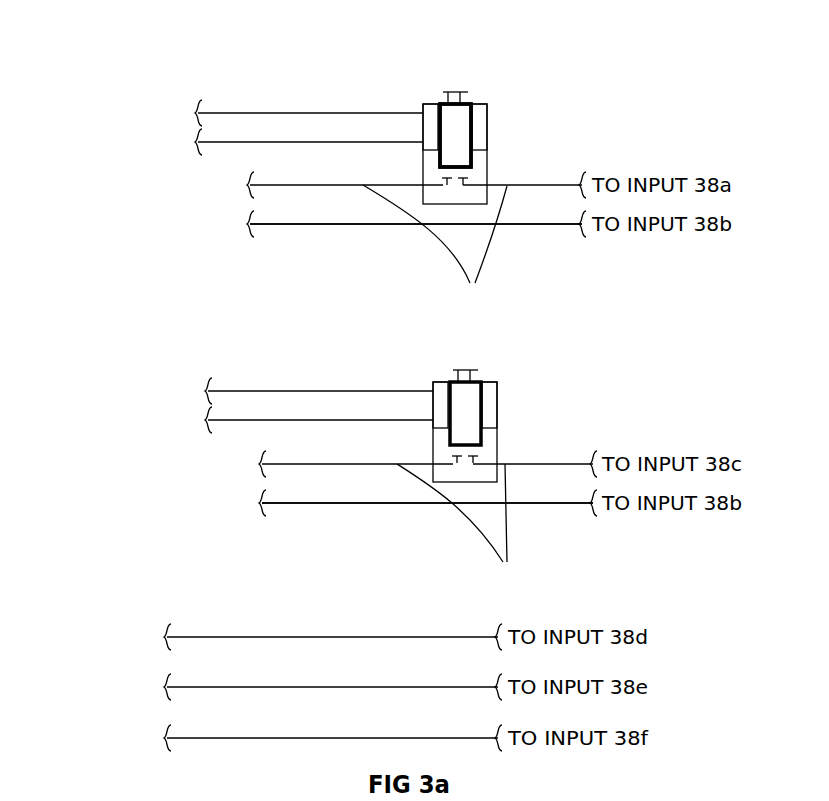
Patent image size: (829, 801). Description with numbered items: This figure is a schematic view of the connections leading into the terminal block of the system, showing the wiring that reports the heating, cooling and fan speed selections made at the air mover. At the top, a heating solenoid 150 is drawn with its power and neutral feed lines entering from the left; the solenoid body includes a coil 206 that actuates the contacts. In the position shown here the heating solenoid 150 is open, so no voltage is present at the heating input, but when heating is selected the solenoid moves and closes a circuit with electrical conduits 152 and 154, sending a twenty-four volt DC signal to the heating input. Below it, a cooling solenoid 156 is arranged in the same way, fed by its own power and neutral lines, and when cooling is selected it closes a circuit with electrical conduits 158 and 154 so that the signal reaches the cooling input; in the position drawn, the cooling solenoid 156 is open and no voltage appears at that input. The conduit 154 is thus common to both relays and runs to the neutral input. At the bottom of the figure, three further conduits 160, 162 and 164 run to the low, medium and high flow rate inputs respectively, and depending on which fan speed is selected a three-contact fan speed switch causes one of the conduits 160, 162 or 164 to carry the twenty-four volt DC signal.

The heating solenoid 150 is at (416, 88).
The relay coil 206 is at (463, 125).
The electrical conduit 152 is at (435, 250).
The electrical conduit 154 is at (367, 226).
The cooling solenoid 156 is at (426, 368).
The electrical conduit 158 is at (460, 530).
The conduit 160 is at (265, 637).
The conduit 162 is at (265, 687).
The conduit 164 is at (277, 738).